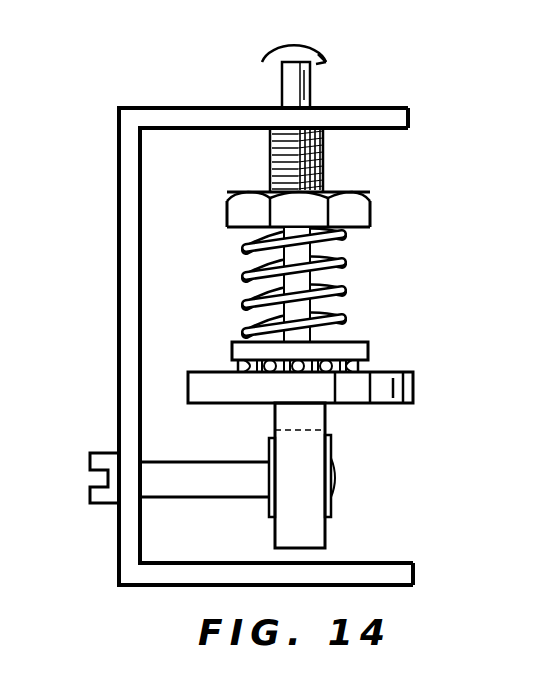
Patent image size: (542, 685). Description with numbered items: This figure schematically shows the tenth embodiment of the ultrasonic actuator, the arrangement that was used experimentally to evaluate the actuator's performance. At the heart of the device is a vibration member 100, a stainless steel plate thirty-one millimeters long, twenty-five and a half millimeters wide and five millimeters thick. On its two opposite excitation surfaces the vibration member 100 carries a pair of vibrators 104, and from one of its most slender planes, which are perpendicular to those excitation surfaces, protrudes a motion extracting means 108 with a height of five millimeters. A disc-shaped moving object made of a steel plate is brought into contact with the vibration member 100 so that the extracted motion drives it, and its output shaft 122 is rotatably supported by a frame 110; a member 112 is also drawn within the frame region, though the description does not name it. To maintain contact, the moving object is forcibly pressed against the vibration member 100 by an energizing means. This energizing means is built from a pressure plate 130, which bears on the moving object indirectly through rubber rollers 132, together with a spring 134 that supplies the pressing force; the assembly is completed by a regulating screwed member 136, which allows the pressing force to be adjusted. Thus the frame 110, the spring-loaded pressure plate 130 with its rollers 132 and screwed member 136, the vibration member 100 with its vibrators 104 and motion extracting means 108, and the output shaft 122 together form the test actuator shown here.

The vibration member 100 is at (312, 533).
The vibrators 104 is at (270, 447).
The motion extracting means 108 is at (318, 410).
The frame 110 is at (127, 258).
The support arm 112 is at (210, 488).
The output shaft 122 is at (300, 93).
The pressure plate 130 is at (350, 343).
The rubber rollers 132 is at (233, 365).
The spring 134 is at (343, 259).
The regulating screwed member 136 is at (243, 200).